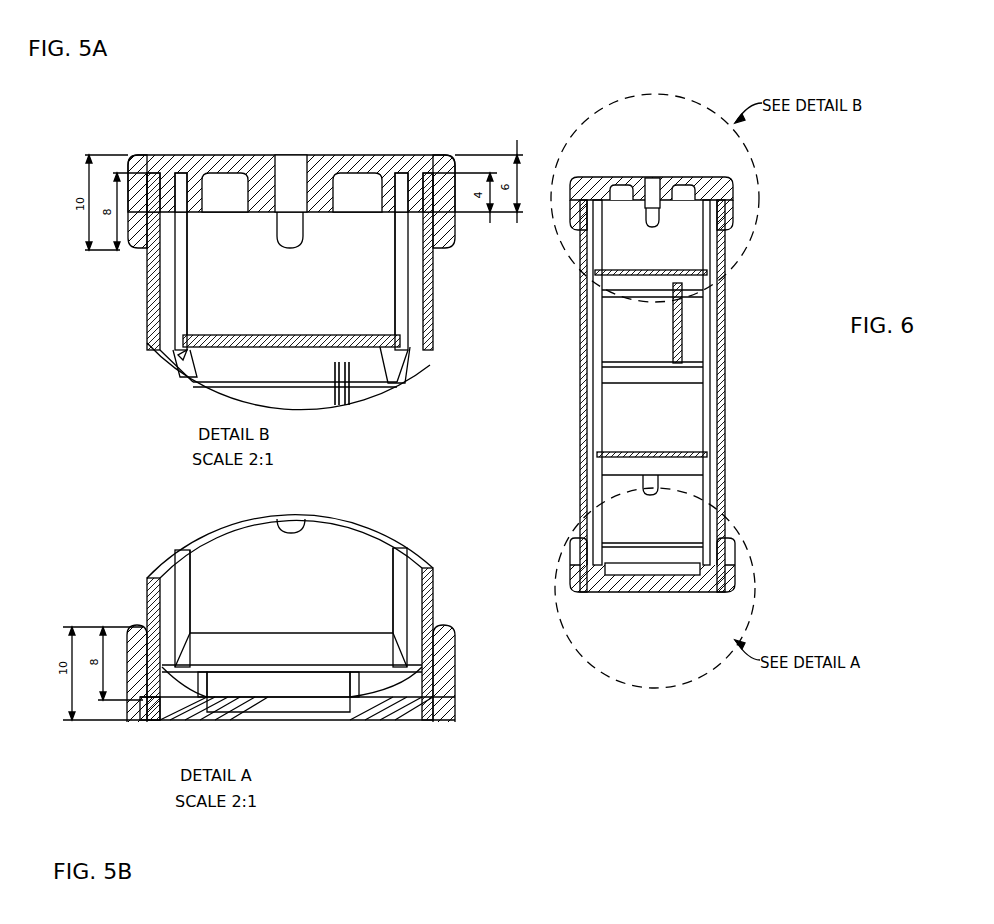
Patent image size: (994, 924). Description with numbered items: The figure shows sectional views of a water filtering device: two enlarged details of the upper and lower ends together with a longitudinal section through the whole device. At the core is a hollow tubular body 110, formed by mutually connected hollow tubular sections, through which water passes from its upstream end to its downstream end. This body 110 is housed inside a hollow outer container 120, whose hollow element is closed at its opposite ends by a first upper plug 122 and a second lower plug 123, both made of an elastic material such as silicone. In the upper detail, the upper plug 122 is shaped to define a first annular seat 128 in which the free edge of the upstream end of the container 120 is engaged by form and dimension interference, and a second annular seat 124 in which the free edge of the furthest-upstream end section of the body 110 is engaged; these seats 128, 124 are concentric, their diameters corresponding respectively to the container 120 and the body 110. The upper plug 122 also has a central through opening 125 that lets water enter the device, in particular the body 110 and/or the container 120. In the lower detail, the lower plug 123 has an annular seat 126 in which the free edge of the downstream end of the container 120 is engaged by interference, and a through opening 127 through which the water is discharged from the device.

In FIG. 6, the hollow tubular body 110 is at (703, 420).
In FIG. 6, the hollow outer container 120 is at (718, 345).
In FIG. 5A, the first upper plug 122 is at (442, 160).
In FIG. 6, the first upper plug 122 is at (668, 193).
In FIG. 5B, the second lower plug 123 is at (447, 718).
In FIG. 6, the second lower plug 123 is at (600, 585).
In FIG. 5A, the second annular seat 124 is at (395, 168).
In FIG. 5A, the central through opening 125 is at (293, 168).
In FIG. 5B, the annular seat 126 is at (427, 700).
In FIG. 5B, the through opening 127 is at (289, 712).
In FIG. 5A, the first annular seat 128 is at (426, 168).